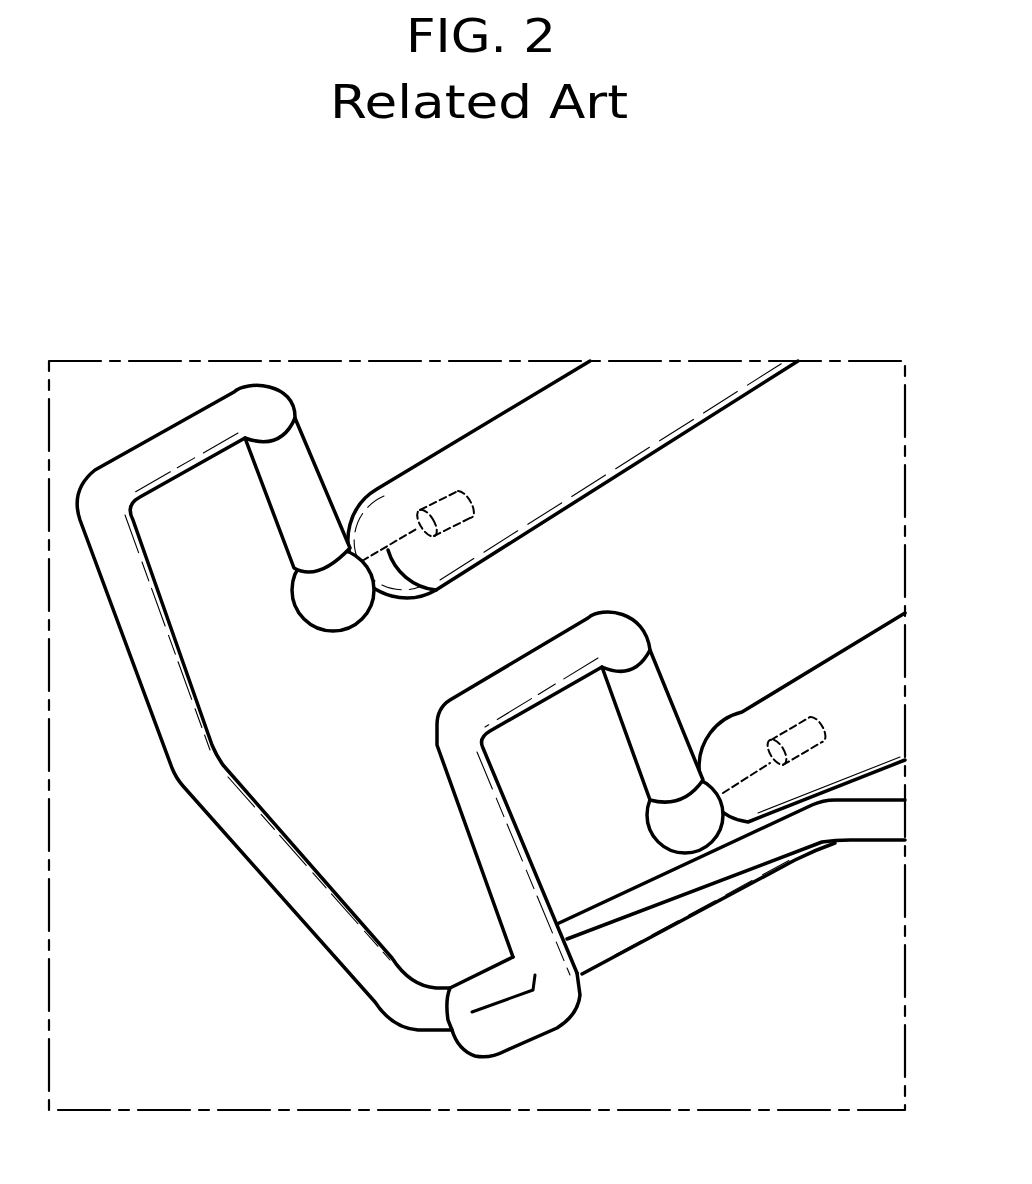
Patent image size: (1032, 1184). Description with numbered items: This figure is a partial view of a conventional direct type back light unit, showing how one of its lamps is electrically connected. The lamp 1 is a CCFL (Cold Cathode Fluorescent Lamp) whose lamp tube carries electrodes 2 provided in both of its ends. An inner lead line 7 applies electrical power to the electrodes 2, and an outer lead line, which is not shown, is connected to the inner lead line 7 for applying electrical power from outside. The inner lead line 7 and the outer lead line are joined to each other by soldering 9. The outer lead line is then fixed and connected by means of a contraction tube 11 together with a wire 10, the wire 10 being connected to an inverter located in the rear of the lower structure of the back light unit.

The lamp 1 is at (650, 452).
The electrodes 2 is at (461, 519).
The inner lead line 7 is at (391, 551).
The soldering 9 is at (323, 631).
The wire 10 is at (610, 903).
The contraction tube 11 is at (305, 472).